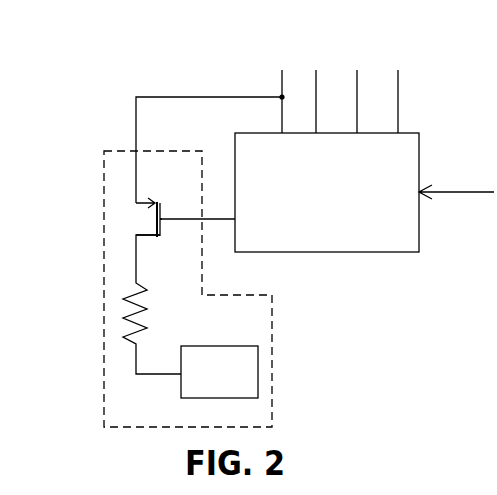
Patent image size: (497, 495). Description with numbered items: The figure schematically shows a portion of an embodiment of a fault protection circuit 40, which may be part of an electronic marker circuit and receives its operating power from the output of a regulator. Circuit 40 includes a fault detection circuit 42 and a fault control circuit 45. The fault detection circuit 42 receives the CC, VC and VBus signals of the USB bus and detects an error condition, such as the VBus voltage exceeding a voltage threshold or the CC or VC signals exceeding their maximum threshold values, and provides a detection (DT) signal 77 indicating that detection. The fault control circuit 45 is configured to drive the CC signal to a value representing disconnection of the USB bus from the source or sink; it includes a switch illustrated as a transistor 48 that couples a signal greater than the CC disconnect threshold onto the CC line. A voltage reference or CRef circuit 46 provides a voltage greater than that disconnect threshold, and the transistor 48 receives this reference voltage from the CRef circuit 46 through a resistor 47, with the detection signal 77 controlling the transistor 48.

The circuit 40 is at (84, 64).
The fault detection circuit 42 is at (386, 253).
The fault control circuit 45 is at (272, 373).
The CRef circuit 46 is at (210, 346).
The resistor 47 is at (150, 322).
The transistor 48 is at (150, 238).
The detection (DT) signal 77 is at (208, 220).